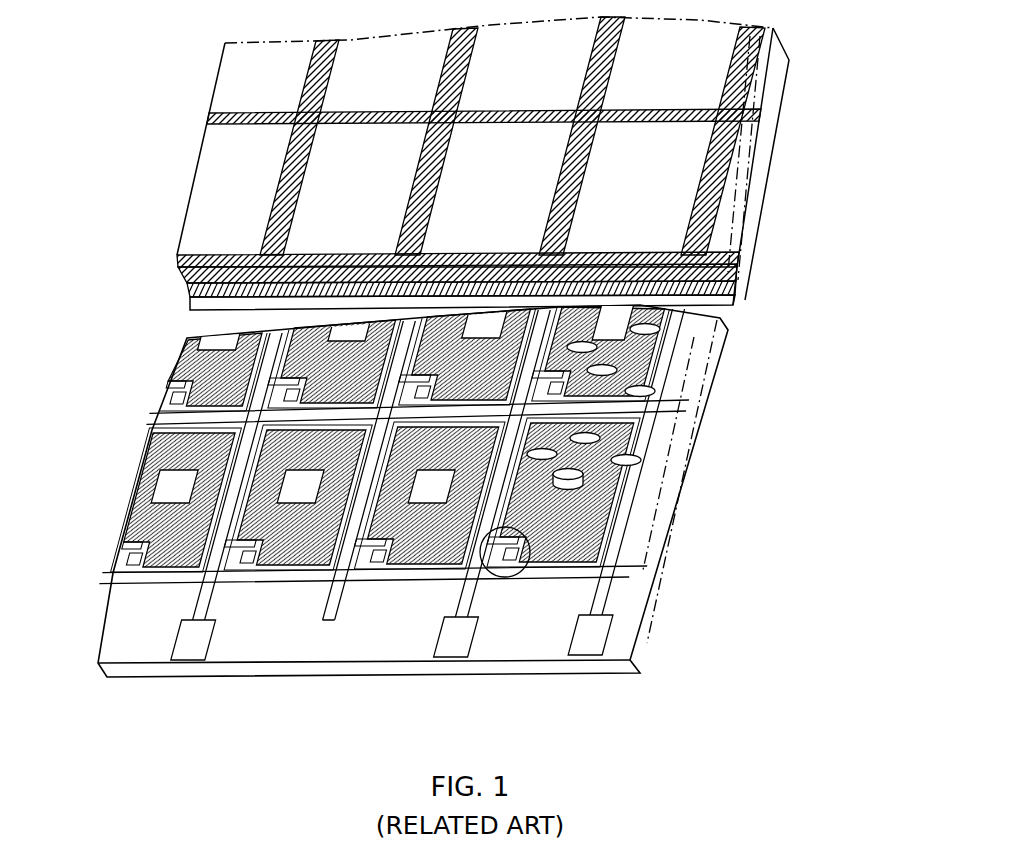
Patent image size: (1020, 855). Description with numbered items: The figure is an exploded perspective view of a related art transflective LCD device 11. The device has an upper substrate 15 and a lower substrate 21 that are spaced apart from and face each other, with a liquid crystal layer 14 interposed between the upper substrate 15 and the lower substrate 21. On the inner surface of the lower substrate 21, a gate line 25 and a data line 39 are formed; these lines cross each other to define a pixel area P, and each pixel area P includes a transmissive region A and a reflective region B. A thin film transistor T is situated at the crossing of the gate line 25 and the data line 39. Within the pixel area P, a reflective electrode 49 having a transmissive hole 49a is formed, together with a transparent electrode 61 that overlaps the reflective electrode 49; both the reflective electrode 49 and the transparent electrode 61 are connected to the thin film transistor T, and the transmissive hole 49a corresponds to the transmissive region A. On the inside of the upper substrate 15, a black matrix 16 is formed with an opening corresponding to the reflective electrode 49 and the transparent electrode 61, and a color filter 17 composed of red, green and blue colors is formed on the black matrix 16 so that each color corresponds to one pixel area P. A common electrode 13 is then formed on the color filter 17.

The transflective LCD device 11 is at (805, 515).
The common electrode 13 is at (735, 299).
The liquid crystal layer 14 is at (630, 390).
The upper substrate 15 is at (178, 271).
The black matrix 16 is at (190, 290).
The color filter 17 is at (690, 170).
The lower substrate 21 is at (352, 667).
The gate line 25 is at (630, 573).
The data line 39 is at (470, 603).
The reflective electrode 49 is at (137, 540).
The transmissive hole 49a is at (150, 491).
The transparent electrode 61 is at (147, 572).
The transmissive region A is at (614, 462).
The pixel area P is at (622, 490).
The reflective region B is at (600, 521).
The thin film transistor T is at (517, 575).